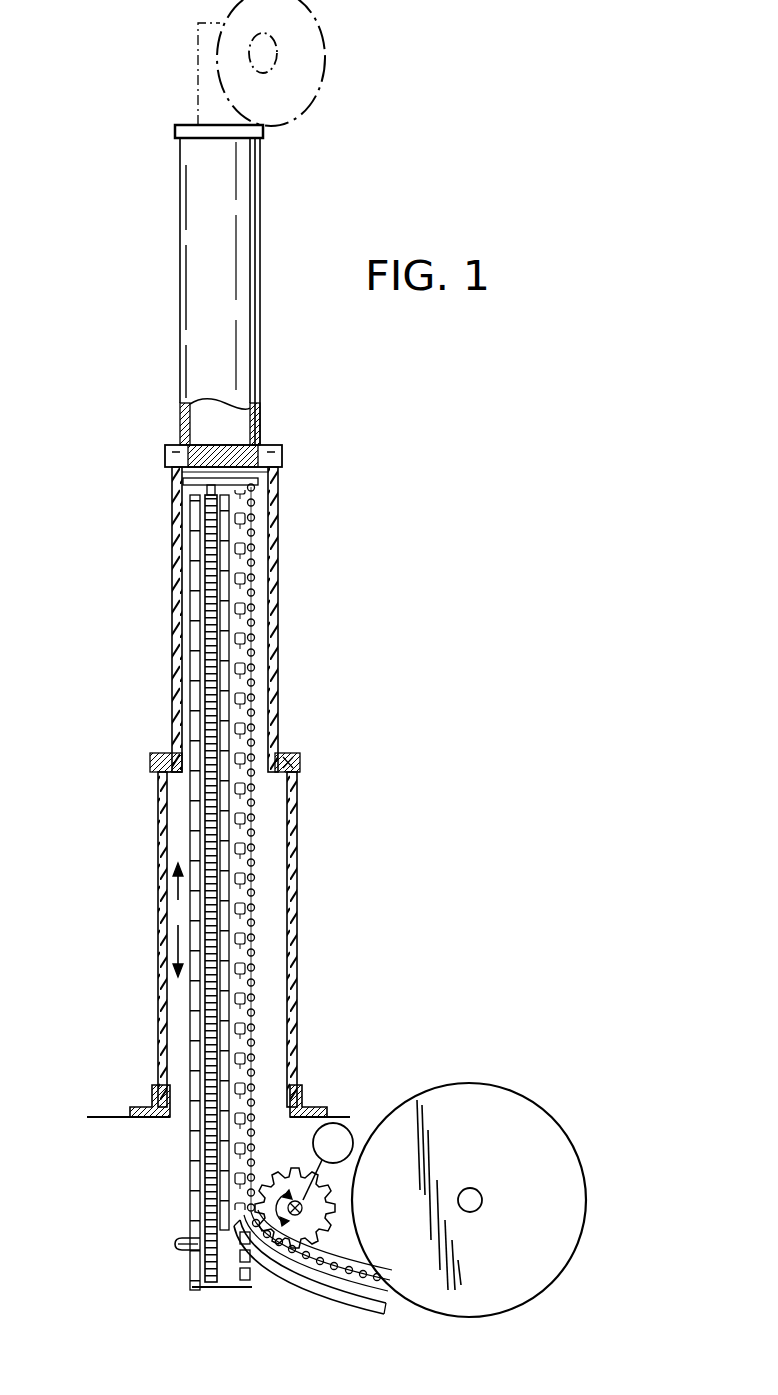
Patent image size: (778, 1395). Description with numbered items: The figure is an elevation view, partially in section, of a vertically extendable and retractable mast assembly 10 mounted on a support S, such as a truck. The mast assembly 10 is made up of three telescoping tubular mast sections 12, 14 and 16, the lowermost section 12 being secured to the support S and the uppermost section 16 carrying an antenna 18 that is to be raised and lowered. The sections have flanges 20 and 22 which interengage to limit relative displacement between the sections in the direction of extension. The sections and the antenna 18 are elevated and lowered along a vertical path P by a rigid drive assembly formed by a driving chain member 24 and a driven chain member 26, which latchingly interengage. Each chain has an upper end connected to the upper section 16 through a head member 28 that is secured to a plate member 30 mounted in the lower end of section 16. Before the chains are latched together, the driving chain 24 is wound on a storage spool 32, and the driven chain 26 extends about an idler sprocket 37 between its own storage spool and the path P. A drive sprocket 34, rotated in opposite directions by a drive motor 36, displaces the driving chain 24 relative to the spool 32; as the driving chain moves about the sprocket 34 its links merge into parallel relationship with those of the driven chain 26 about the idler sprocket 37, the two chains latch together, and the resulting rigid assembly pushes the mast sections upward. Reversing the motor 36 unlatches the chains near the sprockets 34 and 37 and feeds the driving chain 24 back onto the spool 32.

The mast assembly 10 is at (466, 604).
The lowermost mast section 12 is at (158, 848).
The mast section 14 is at (172, 636).
The uppermost mast section 16 is at (197, 300).
The antenna 18 is at (313, 33).
The flange 20 is at (278, 478).
The flange 22 is at (282, 452).
The driving chain member 24 is at (261, 897).
The driven chain member 26 is at (197, 1007).
The head member 28 is at (183, 482).
The plate member 30 is at (222, 450).
The storage spool 32 is at (505, 1093).
The drive sprocket 34 is at (303, 1236).
The drive motor 36 is at (348, 1122).
The idler sprocket 37 is at (197, 1258).
The vertical path P is at (160, 916).
The support S is at (87, 1117).